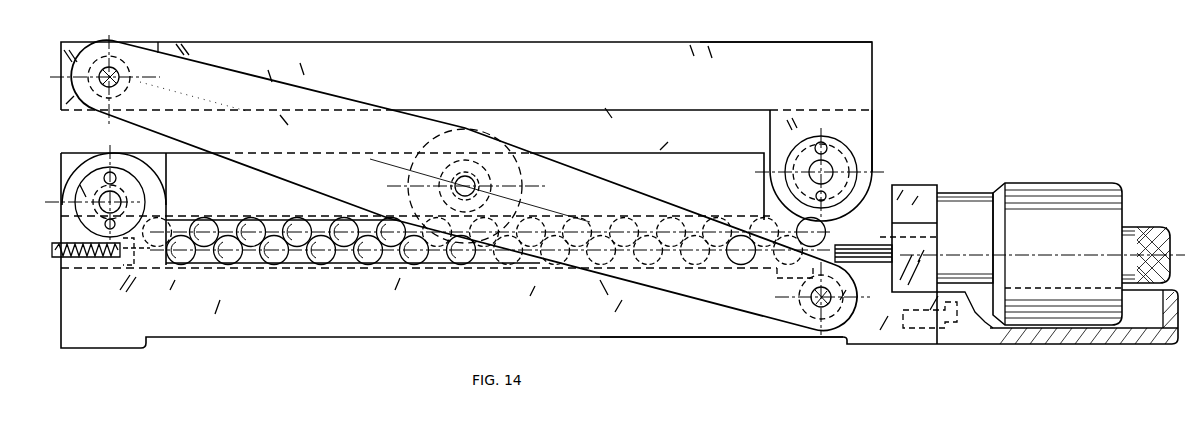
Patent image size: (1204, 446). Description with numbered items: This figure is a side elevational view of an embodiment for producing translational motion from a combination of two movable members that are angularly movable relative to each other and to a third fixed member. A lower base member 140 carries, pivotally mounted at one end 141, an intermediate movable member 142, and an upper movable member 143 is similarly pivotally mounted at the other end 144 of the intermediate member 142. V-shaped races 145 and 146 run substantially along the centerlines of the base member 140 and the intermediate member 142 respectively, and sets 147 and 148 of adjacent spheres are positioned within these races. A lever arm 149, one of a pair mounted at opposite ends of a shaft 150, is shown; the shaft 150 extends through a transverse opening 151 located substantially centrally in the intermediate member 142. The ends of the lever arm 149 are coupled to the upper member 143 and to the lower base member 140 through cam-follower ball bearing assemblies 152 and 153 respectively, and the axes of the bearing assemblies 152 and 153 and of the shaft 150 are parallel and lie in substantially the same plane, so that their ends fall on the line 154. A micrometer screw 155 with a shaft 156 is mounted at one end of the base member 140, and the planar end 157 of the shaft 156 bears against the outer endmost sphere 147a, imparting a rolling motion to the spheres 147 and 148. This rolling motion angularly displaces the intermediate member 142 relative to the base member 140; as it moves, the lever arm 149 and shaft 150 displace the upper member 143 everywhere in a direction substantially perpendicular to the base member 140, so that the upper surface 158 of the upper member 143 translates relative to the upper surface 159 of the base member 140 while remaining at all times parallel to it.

The lower base member 140 is at (494, 301).
The one end of lower base member 141 is at (61, 183).
The intermediate movable member 142 is at (747, 198).
The upper movable member 143 is at (672, 85).
The other end of intermediate member 144 is at (878, 143).
The V-shaped race 145 is at (350, 268).
The V-shaped race 146 is at (313, 225).
The set of adjacent spheres 147 is at (281, 262).
The outer endmost sphere 147a is at (873, 216).
The set of adjacent spheres 148 is at (242, 219).
The lever arm 149 is at (729, 356).
The shaft 150 is at (470, 186).
The transverse opening 151 is at (495, 162).
The cam-follower ball bearing assembly 152 is at (113, 64).
The cam-follower ball bearing assembly 153 is at (845, 359).
The line 154 is at (59, 58).
The micrometer screw 155 is at (1120, 187).
The shaft of micrometer screw 156 is at (890, 256).
The planar end of shaft 157 is at (844, 250).
The upper surface of upper member 158 is at (776, 43).
The upper surface of base member 159 is at (388, 268).